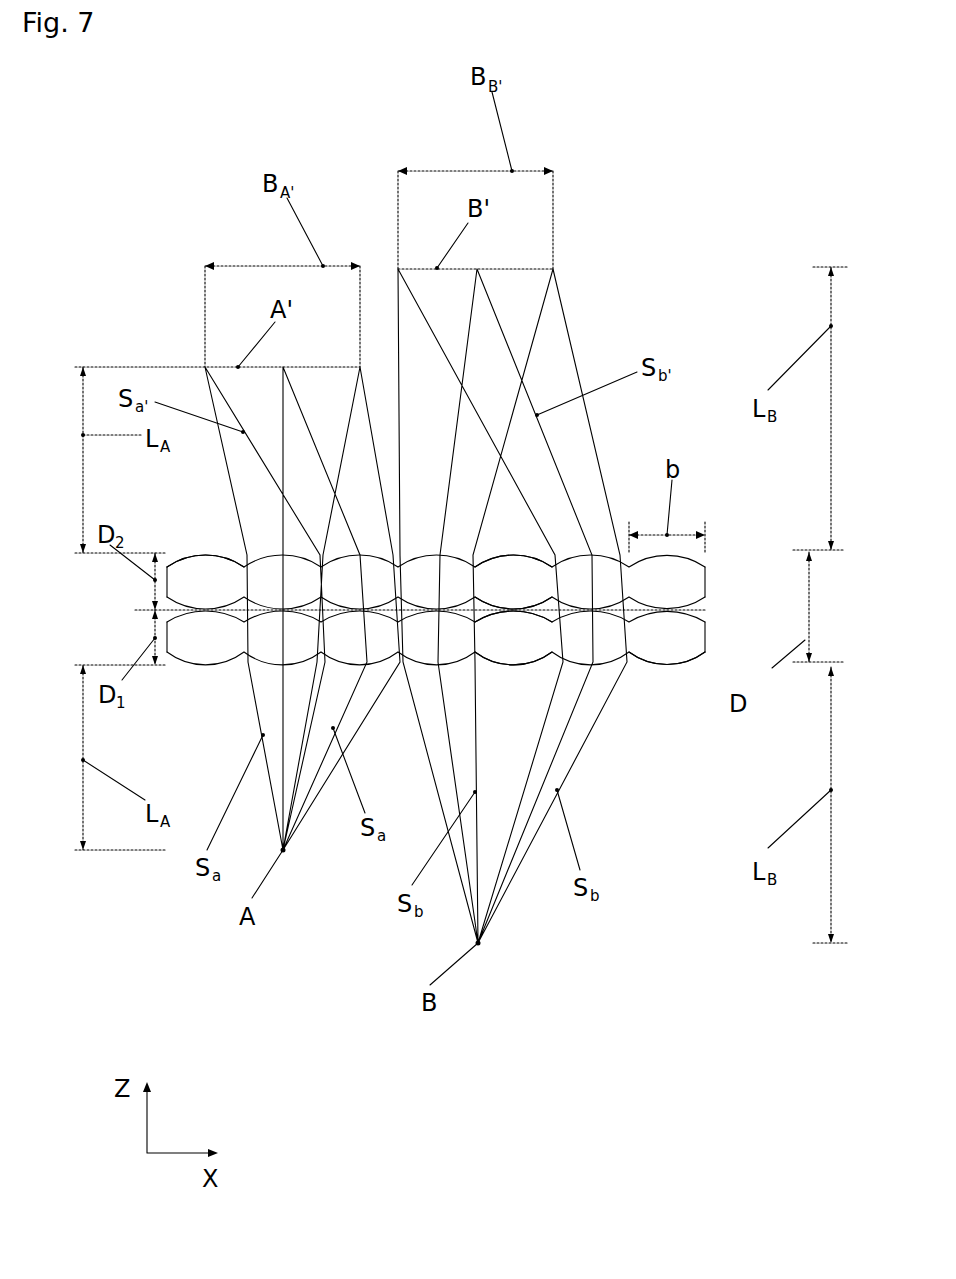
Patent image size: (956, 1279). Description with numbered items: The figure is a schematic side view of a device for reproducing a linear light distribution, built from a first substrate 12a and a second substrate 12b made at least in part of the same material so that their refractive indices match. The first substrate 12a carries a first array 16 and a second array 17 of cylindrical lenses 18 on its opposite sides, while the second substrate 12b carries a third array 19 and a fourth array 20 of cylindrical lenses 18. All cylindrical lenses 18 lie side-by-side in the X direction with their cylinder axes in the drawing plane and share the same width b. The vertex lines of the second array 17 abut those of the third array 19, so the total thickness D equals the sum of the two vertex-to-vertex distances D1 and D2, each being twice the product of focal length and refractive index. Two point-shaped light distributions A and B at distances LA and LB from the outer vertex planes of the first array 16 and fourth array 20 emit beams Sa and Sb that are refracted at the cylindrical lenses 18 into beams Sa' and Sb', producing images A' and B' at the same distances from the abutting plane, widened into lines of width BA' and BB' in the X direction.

The first substrate 12a is at (720, 637).
The second substrate 12b is at (720, 587).
The first array 16 is at (643, 672).
The second array 17 is at (637, 618).
The cylindrical lens 18 is at (490, 613).
The third array 19 is at (237, 604).
The fourth array 20 is at (195, 550).